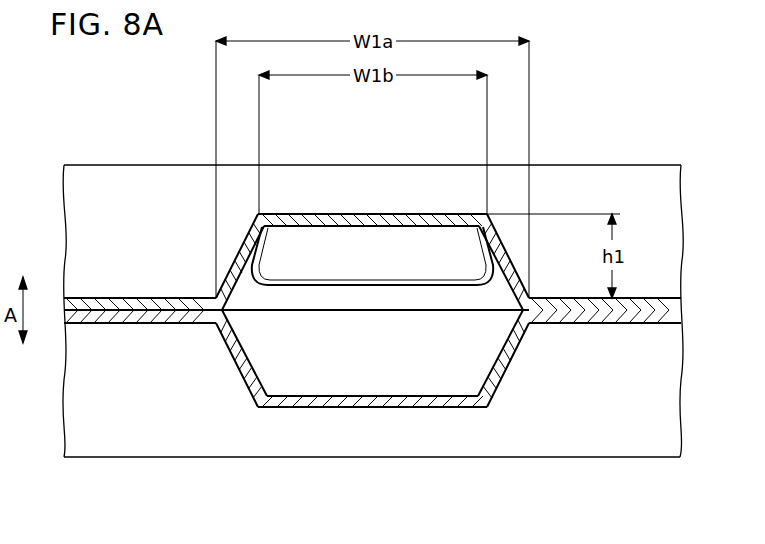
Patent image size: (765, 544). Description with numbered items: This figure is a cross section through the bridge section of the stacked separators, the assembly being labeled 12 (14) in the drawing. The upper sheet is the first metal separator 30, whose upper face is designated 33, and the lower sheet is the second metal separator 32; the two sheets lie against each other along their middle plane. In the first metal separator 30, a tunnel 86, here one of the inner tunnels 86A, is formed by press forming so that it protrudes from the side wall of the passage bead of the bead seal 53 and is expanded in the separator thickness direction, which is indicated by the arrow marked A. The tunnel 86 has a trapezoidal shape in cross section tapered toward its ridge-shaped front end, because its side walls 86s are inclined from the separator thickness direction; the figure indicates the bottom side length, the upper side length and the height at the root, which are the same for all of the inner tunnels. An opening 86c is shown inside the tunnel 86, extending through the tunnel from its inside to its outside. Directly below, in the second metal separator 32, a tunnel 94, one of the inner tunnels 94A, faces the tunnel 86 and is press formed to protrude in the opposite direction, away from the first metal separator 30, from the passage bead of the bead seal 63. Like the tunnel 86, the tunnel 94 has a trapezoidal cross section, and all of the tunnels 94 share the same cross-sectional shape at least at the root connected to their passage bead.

The fuel cell 12 is at (372, 262).
The cell 14 is at (657, 89).
The first metal separator 30 is at (155, 164).
The second metal separator 32 is at (160, 458).
The surface of first member 33 is at (117, 143).
The bead seal of first metal separator 53 is at (605, 177).
The bead seal of second metal separator 63 is at (555, 445).
The tunnel 86 is at (372, 217).
The inner tunnel 86A is at (318, 212).
The opening 86c is at (383, 243).
The side wall of tunnel 86s is at (235, 253).
The tunnel 94 is at (372, 409).
The inner tunnel 94A is at (396, 410).